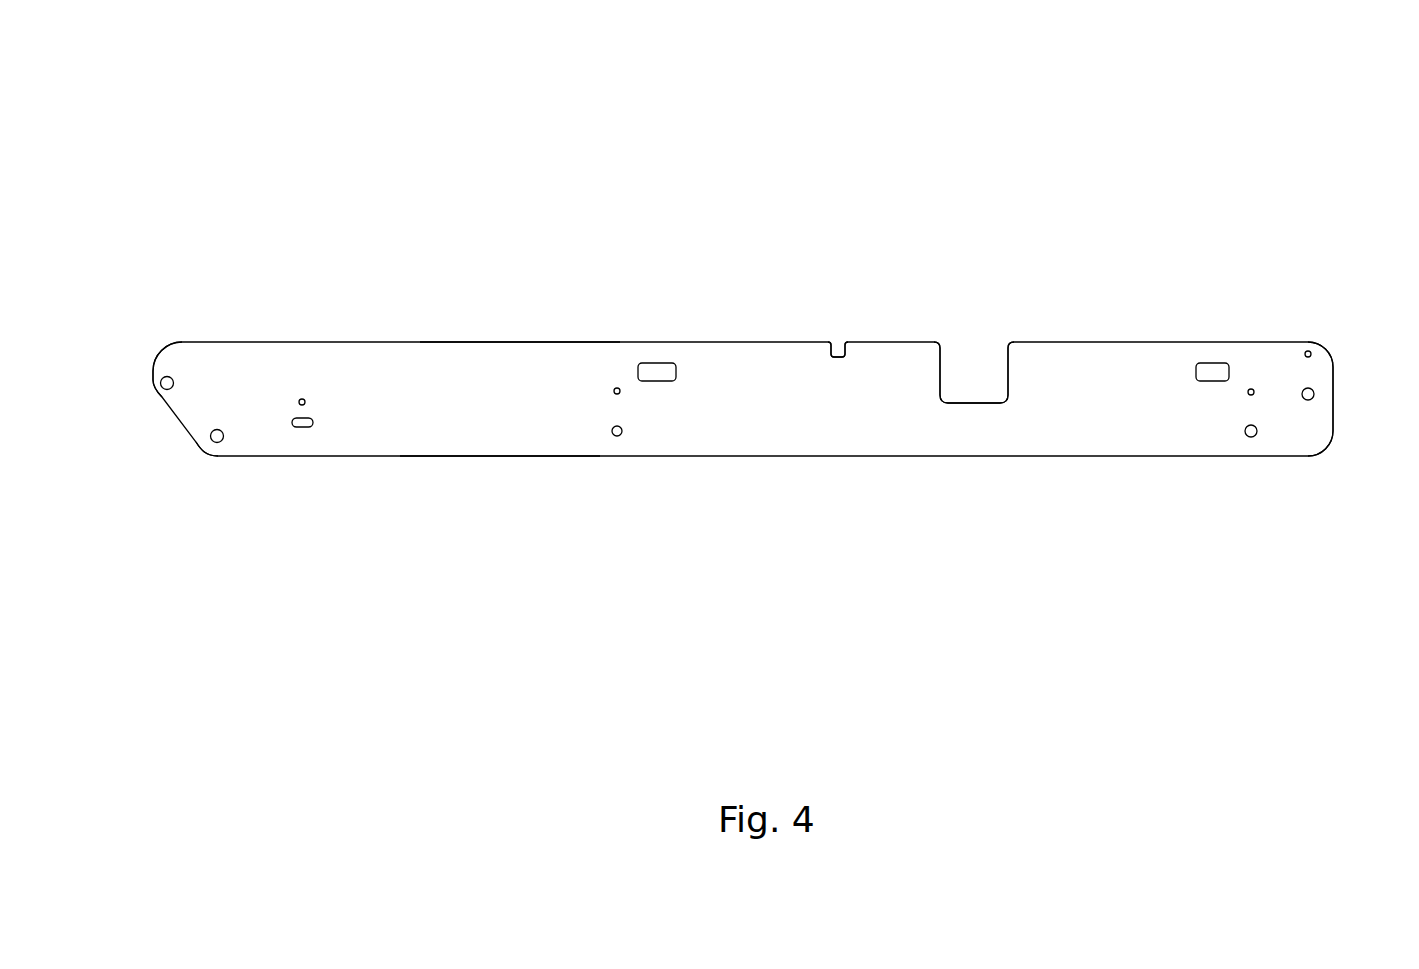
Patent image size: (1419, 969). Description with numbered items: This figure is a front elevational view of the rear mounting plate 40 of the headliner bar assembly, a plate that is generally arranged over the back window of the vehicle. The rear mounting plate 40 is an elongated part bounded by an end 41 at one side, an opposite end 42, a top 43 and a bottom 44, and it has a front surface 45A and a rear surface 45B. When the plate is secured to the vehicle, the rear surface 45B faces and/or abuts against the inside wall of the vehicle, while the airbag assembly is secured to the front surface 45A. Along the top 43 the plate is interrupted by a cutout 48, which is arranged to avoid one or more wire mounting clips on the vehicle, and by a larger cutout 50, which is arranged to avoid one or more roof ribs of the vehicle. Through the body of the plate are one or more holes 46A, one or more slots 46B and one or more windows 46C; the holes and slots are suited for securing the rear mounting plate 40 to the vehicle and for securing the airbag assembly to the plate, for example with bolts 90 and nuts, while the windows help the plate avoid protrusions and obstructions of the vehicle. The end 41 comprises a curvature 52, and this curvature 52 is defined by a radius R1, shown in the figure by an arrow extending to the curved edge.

The rear mounting plate 40 is at (657, 160).
The end 41 is at (157, 362).
The end 42 is at (1334, 397).
The top 43 is at (565, 343).
The bottom 44 is at (557, 457).
The front surface 45A is at (448, 423).
The rear surface 45B is at (465, 343).
The holes 46A is at (617, 437).
The slots 46B is at (300, 428).
The windows 46C is at (655, 366).
The cutout 48 is at (839, 335).
The cutout 50 is at (968, 352).
The curvature 52 is at (171, 450).
The bolts 90 is at (302, 398).
The radius R1 is at (182, 418).